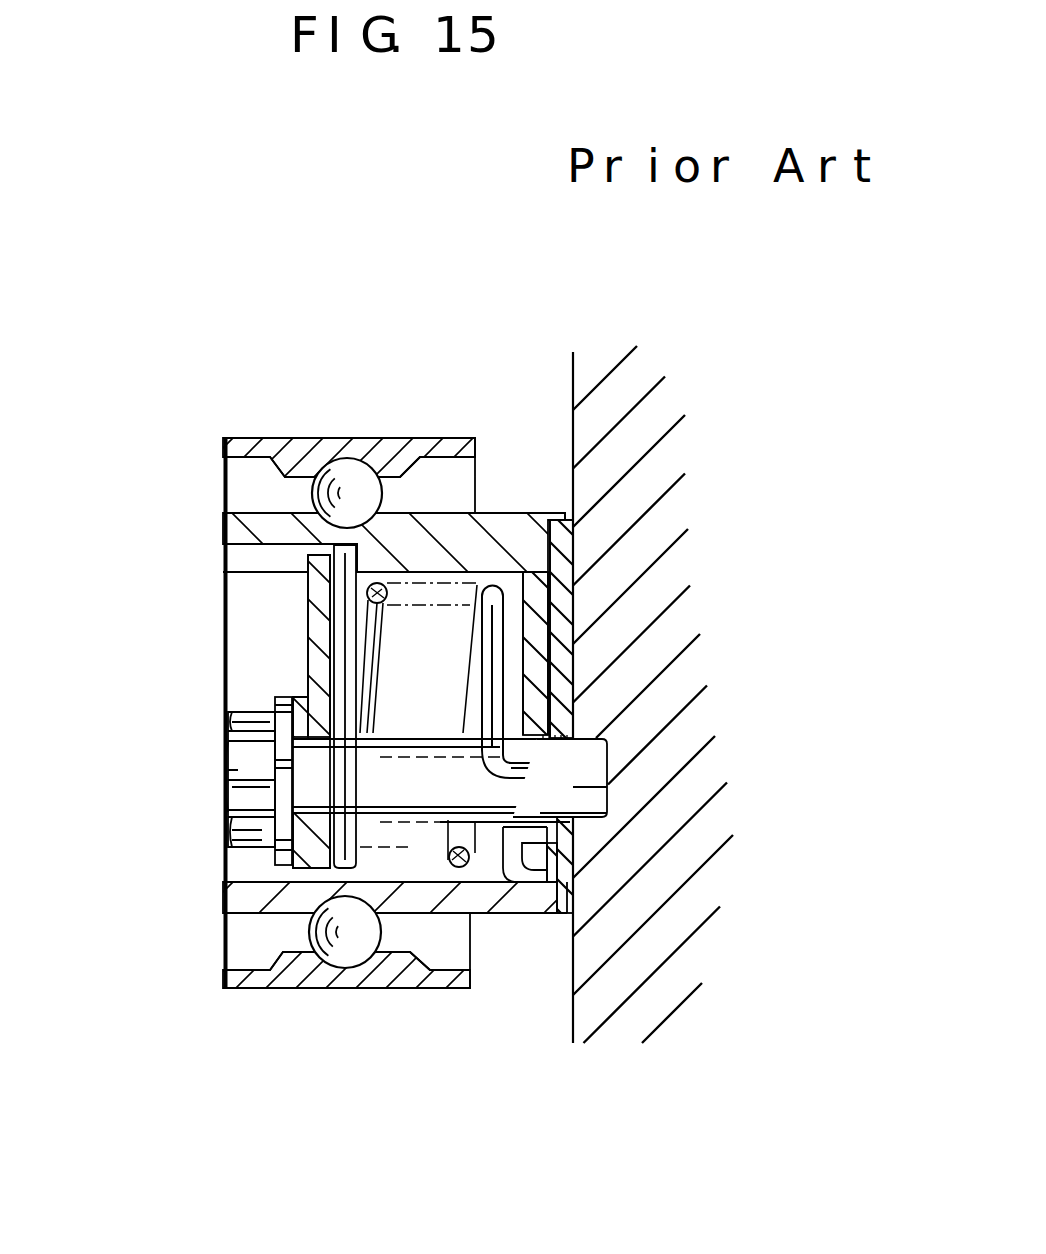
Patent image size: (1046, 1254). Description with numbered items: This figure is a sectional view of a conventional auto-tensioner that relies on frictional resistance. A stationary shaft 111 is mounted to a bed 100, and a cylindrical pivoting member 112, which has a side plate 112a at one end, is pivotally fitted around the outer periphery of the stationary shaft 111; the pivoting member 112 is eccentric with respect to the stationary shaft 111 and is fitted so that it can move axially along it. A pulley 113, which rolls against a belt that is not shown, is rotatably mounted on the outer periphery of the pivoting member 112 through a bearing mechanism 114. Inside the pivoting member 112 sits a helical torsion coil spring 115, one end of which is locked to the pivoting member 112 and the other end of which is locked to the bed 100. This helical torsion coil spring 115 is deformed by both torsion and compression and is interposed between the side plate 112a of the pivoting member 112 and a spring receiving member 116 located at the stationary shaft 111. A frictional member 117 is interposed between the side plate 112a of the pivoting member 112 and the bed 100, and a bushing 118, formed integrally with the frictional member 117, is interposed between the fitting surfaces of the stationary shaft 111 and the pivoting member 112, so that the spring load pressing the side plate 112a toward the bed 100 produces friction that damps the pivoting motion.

The bed 100 is at (570, 443).
The stationary shaft 111 is at (428, 783).
The pivoting member 112 is at (428, 522).
The side plate 112a is at (533, 670).
The pulley 113 is at (318, 437).
The bearing mechanism 114 is at (327, 497).
The helical torsion coil spring 115 is at (490, 662).
The spring receiving member 116 is at (317, 618).
The frictional member 117 is at (553, 693).
The bushing 118 is at (537, 807).